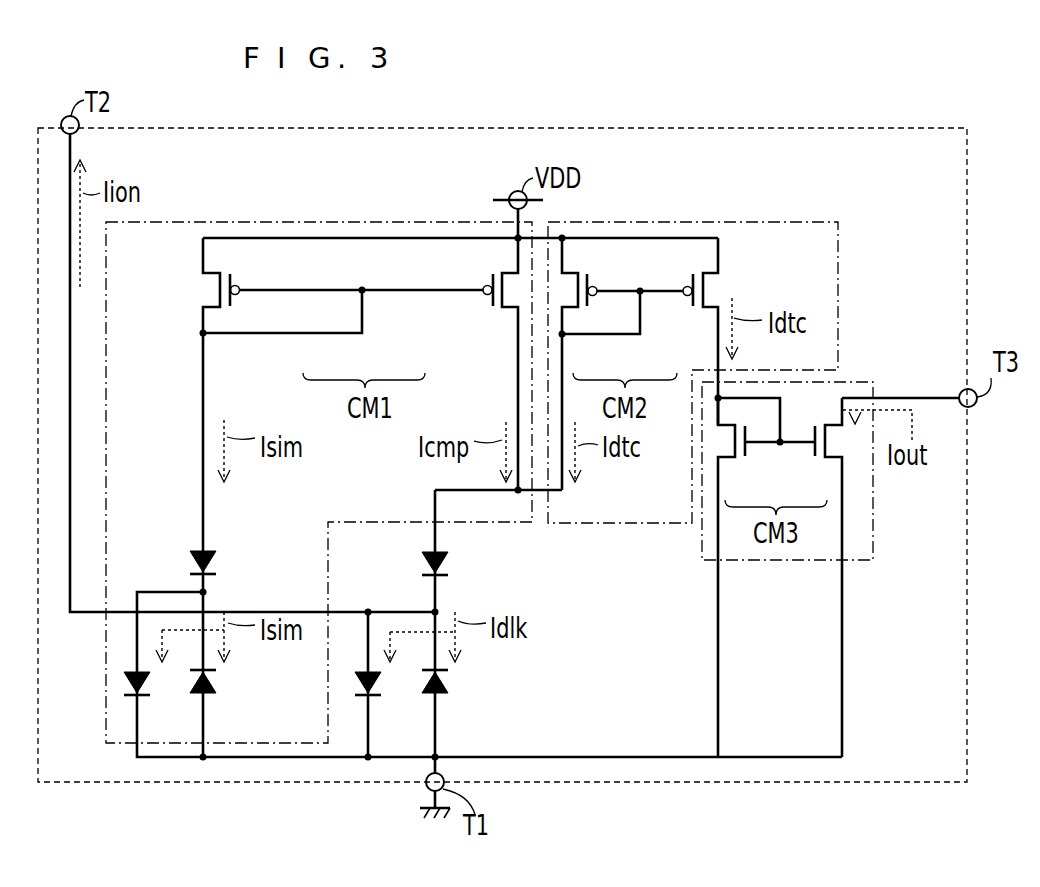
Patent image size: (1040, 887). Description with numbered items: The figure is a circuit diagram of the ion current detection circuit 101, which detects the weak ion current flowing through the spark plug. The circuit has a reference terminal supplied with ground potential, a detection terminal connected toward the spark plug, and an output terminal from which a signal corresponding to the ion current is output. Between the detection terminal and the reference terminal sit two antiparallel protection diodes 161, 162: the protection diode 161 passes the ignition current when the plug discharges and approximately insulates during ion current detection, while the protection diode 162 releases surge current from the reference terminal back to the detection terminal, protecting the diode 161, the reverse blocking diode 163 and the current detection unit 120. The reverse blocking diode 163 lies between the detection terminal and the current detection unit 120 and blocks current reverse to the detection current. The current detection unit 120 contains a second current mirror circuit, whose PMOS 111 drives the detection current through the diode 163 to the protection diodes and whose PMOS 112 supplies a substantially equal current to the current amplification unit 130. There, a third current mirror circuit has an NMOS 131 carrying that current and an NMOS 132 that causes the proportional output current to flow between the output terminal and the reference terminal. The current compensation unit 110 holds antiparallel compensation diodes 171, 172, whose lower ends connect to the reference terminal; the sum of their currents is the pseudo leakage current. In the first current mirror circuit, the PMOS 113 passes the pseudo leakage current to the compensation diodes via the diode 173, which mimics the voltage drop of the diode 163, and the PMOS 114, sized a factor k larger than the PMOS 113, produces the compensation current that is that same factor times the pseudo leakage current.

The ion current detection circuit 101 is at (487, 128).
The current compensation unit 110 is at (320, 222).
The current detection unit 120 is at (713, 222).
The current amplification unit 130 is at (843, 382).
The PMOS 111 is at (588, 307).
The PMOS 112 is at (691, 308).
The PMOS 113 is at (231, 305).
The PMOS 114 is at (491, 305).
The NMOS 131 is at (745, 458).
The NMOS 132 is at (815, 458).
The protection diode 161 is at (372, 683).
The protection diode 162 is at (440, 685).
The reverse blocking diode 163 is at (451, 561).
The compensation diode 171 is at (141, 683).
The compensation diode 172 is at (208, 685).
The diode 173 is at (219, 560).